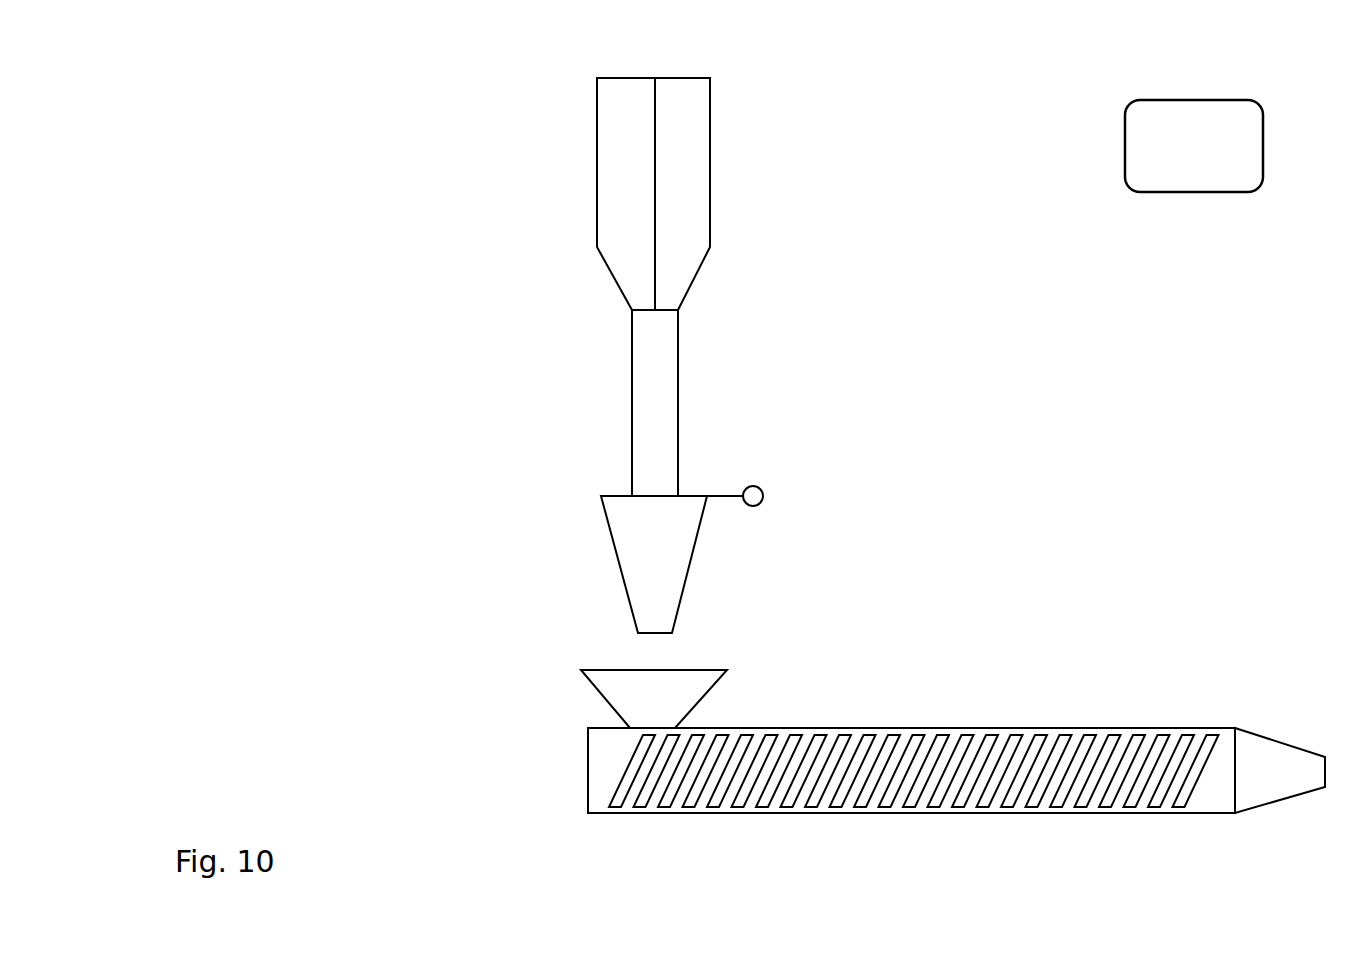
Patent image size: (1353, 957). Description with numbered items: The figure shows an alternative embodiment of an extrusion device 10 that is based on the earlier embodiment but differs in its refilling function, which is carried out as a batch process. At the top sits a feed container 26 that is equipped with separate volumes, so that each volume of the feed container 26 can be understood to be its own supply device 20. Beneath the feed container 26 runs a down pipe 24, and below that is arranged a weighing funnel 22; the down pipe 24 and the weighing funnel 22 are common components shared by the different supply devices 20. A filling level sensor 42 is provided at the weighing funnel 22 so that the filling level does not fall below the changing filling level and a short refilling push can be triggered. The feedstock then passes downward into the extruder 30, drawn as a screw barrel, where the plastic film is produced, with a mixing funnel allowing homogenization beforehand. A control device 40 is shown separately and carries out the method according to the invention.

The extrusion device 10 is at (482, 114).
The supply device 20 is at (758, 197).
The weighing funnel 22 is at (677, 613).
The down pipe 24 is at (679, 353).
The feed container 26 is at (710, 98).
The extruder 30 is at (1145, 728).
The control device 40 is at (1183, 100).
The filling level sensor 42 is at (757, 487).